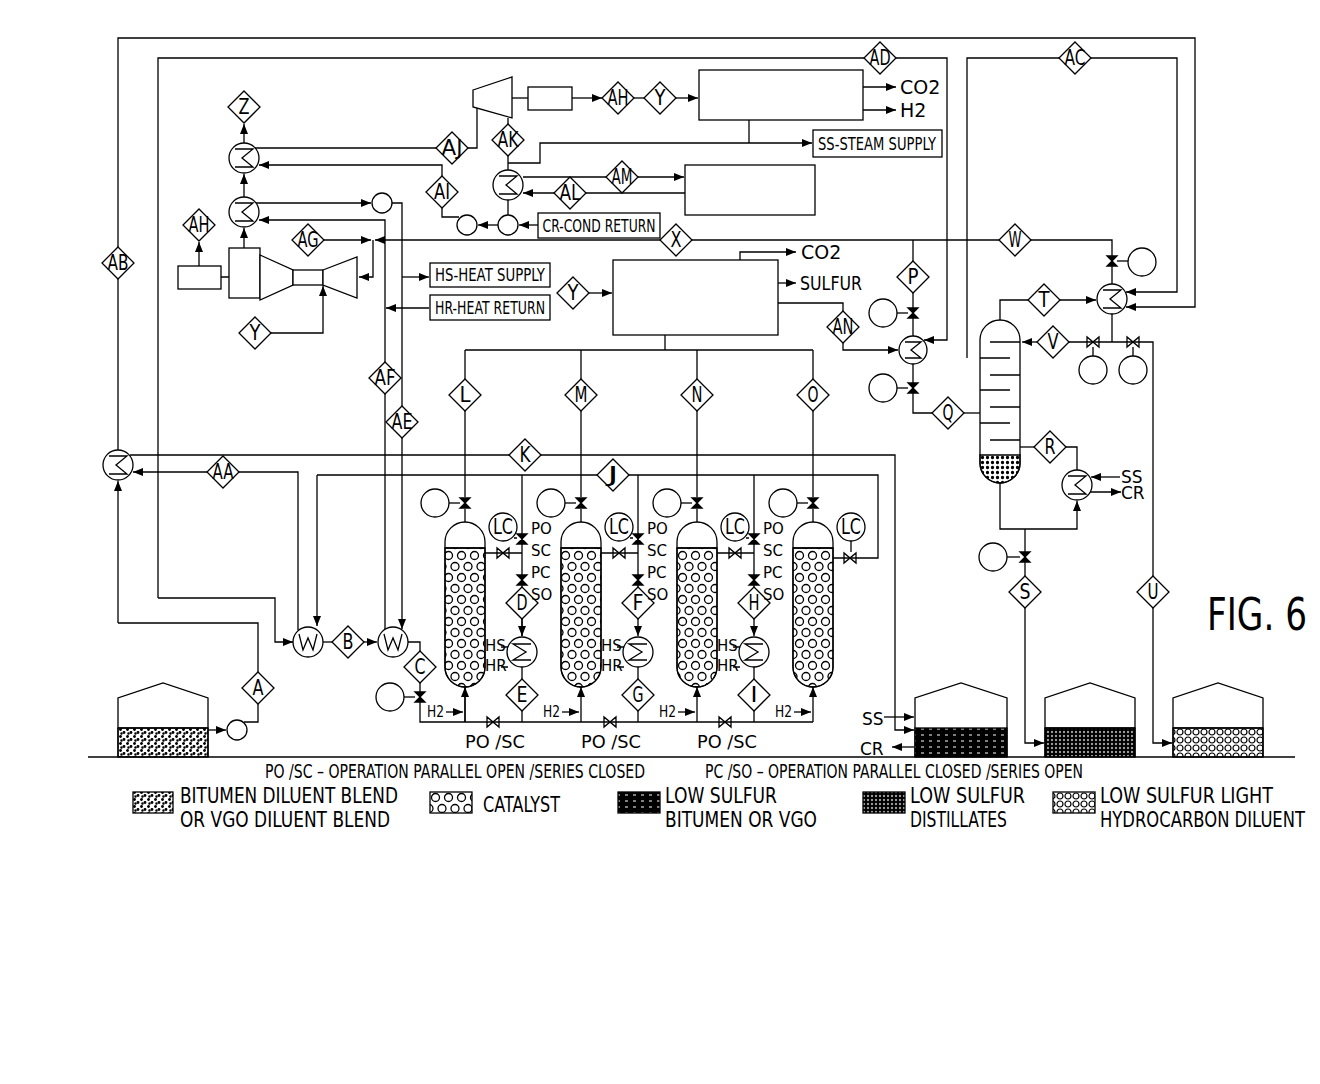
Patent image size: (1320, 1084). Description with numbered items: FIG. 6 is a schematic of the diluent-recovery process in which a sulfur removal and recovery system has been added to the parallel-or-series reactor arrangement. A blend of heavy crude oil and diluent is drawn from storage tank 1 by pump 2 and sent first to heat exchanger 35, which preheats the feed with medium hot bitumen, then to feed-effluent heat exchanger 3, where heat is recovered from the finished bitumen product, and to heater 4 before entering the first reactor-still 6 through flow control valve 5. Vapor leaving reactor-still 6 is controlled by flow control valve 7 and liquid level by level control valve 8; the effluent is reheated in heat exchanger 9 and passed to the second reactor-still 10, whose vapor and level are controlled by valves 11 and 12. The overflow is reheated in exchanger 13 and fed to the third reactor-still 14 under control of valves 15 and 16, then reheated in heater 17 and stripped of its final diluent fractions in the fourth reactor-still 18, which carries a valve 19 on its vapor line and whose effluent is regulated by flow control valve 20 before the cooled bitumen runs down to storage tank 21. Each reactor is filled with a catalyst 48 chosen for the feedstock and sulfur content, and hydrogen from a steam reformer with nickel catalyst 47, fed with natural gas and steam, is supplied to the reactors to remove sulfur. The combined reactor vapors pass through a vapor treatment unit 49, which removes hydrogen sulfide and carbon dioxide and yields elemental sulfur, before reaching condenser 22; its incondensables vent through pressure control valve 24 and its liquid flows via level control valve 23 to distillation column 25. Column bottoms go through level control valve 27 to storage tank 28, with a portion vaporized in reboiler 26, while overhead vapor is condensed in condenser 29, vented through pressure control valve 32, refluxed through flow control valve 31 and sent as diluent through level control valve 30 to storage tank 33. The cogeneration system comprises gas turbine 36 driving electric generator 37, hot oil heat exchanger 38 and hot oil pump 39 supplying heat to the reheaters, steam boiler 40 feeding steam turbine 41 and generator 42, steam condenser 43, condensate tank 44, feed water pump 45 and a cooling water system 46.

The storage tank 1 is at (163, 720).
The pump 2 is at (237, 717).
The feed-effluent heat exchanger 3 is at (302, 638).
The heat exchanger 4 is at (387, 638).
The flow control valve 5 is at (394, 690).
The first reactor-still 6 is at (457, 604).
The flow control valve 7 is at (453, 503).
The level control valve 8 is at (512, 577).
The heat exchanger 9 is at (521, 663).
The second reactor-still 10 is at (572, 604).
The vapor flow control valve 11 is at (574, 503).
The control valve 12 is at (626, 577).
The exchanger 13 is at (634, 663).
The third reactor-still 14 is at (687, 604).
The valve 15 is at (690, 503).
The valve 16 is at (742, 577).
The heater 17 is at (750, 663).
The fourth reactor-still 18 is at (803, 604).
The flow control valve 19 is at (806, 503).
The flow control valve 20 is at (850, 574).
The storage tank 21 is at (961, 720).
The condenser 22 is at (923, 340).
The level control valve 23 is at (887, 400).
The pressure control valve 24 is at (893, 302).
The distillation column 25 is at (987, 401).
The reboiler 26 is at (1085, 497).
The level control valve 27 is at (996, 548).
The storage tank 28 is at (1090, 720).
The condenser 29 is at (1102, 292).
The level control valve 30 is at (1127, 373).
The flow control valve 31 is at (1082, 373).
The pressure control valve 32 is at (1135, 250).
The storage tank 33 is at (1218, 720).
The heat exchanger 35 is at (110, 453).
The gas turbine 36 is at (293, 279).
The electric generator 37 is at (199, 277).
The hot oil heat exchanger 38 is at (235, 201).
The hot oil pump 39 is at (371, 195).
The steam boiler 40 is at (235, 151).
The steam turbine 41 is at (492, 97).
The electric generator 42 is at (550, 98).
The steam condenser 43 is at (500, 176).
The condensate tank 44 is at (498, 218).
The feed water pump 45 is at (455, 228).
The cooling water system 46 is at (739, 191).
The hydrogen steam reformer with nickel catalyst 47 is at (768, 98).
The catalyst 48 is at (627, 617).
The vapor treatment unit 49 is at (680, 297).